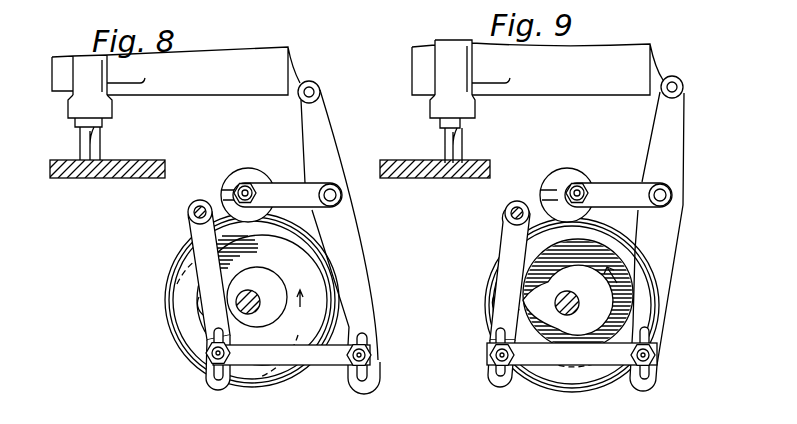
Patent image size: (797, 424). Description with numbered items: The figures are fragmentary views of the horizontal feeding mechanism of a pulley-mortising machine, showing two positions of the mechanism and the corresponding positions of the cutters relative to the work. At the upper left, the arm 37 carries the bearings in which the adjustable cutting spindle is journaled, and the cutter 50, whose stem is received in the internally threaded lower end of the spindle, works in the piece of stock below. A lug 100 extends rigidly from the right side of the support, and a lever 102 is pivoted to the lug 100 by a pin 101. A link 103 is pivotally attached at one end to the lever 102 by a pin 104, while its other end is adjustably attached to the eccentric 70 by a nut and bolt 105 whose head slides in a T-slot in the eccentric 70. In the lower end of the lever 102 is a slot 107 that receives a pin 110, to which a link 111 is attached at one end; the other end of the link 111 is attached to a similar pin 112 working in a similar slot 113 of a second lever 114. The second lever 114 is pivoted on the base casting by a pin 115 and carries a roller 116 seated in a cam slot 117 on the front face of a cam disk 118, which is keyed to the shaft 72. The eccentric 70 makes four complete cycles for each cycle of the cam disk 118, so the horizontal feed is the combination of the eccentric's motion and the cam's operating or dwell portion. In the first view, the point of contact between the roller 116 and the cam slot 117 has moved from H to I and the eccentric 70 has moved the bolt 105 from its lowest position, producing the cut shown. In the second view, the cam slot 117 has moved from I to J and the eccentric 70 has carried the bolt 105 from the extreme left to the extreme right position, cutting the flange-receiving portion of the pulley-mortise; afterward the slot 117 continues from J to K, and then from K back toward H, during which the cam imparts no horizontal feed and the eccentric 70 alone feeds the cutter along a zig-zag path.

In FIG. 8, the arm 37 is at (80, 98).
In FIG. 9, the arm 37 is at (438, 102).
In FIG. 8, the cutters 50 is at (82, 153).
In FIG. 9, the cutters 50 is at (445, 143).
In FIG. 8, the eccentric 70 is at (257, 173).
In FIG. 9, the eccentric 70 is at (570, 170).
In FIG. 8, the shaft 72 is at (247, 312).
In FIG. 9, the shaft 72 is at (570, 296).
In FIG. 8, the lug 100 is at (292, 73).
In FIG. 9, the lug 100 is at (661, 68).
In FIG. 8, the pin 101 is at (319, 84).
In FIG. 9, the pin 101 is at (684, 85).
In FIG. 8, the lever 102 is at (322, 112).
In FIG. 9, the lever 102 is at (678, 128).
In FIG. 8, the link 103 is at (282, 190).
In FIG. 9, the link 103 is at (610, 190).
In FIG. 8, the pin 104 is at (340, 197).
In FIG. 9, the pin 104 is at (672, 197).
In FIG. 8, the nut and bolt 105 is at (242, 188).
In FIG. 9, the nut and bolt 105 is at (581, 186).
In FIG. 8, the slot 107 is at (370, 333).
In FIG. 9, the slot 107 is at (653, 337).
In FIG. 8, the pin 110 is at (377, 355).
In FIG. 9, the pin 110 is at (660, 355).
In FIG. 8, the link 111 is at (330, 362).
In FIG. 9, the link 111 is at (617, 368).
In FIG. 8, the pin 112 is at (230, 367).
In FIG. 9, the pin 112 is at (495, 362).
In FIG. 8, the slot 113 is at (210, 340).
In FIG. 9, the slot 113 is at (495, 341).
In FIG. 8, the second lever 114 is at (198, 230).
In FIG. 9, the second lever 114 is at (508, 242).
In FIG. 8, the pin 115 is at (188, 207).
In FIG. 9, the pin 115 is at (505, 212).
In FIG. 8, the roller 116 is at (185, 283).
In FIG. 9, the roller 116 is at (493, 292).
In FIG. 8, the cam slot 117 is at (233, 248).
In FIG. 9, the cam slot 117 is at (527, 260).
In FIG. 8, the cam disk 118 is at (308, 263).
In FIG. 9, the cam disk 118 is at (627, 262).
In FIG. 8, the cam slot point K is at (248, 163).
In FIG. 8, the cam slot point J is at (173, 225).
In FIG. 8, the cam slot point I is at (160, 302).
In FIG. 8, the cam slot point H is at (185, 370).